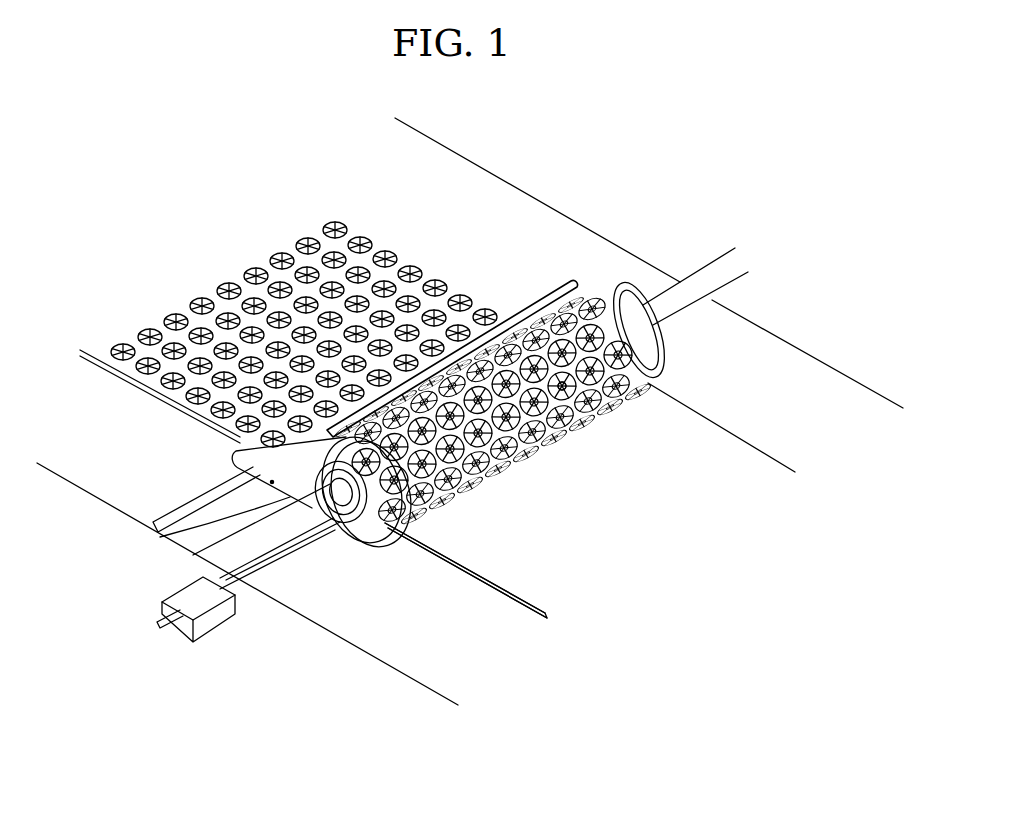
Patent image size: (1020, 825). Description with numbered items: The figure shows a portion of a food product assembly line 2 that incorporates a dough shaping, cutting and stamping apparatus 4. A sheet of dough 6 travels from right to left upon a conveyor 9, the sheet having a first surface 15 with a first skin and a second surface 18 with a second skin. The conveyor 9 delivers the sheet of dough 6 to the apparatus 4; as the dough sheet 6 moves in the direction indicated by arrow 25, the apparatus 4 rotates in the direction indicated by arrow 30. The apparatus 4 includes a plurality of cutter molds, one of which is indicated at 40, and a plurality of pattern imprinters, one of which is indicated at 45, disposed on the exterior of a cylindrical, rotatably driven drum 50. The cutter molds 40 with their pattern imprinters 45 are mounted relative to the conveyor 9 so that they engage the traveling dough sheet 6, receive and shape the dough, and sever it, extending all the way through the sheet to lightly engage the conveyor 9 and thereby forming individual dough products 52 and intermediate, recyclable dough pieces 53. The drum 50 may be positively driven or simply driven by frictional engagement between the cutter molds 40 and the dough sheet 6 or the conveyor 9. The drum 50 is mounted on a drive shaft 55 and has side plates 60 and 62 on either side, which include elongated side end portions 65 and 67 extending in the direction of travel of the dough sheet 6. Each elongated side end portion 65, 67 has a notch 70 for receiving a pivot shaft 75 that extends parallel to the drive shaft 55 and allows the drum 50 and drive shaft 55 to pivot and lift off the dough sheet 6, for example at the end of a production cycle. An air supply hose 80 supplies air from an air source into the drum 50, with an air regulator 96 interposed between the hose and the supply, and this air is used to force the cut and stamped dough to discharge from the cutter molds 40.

The food product assembly line 2 is at (624, 137).
The dough shaping, cutting and stamping apparatus 4 is at (576, 258).
The sheet of dough 6 is at (708, 444).
The conveyor 9 is at (402, 648).
The first surface 15 is at (492, 580).
The second surface 18 is at (472, 582).
The arrow 25 is at (730, 371).
The arrow 30 is at (661, 306).
The cutter mold 40 is at (570, 446).
The pattern imprinter 45 is at (571, 423).
The cylindrical drum 50 is at (514, 474).
The individual dough products 52 is at (340, 213).
The intermediate, recyclable dough pieces 53 is at (333, 243).
The drive shaft 55 is at (727, 253).
The side plate 60 is at (622, 282).
The side plate 62 is at (202, 555).
The elongated side end portion 65 is at (541, 276).
The elongated side end portion 67 is at (160, 537).
The notch 70 is at (240, 463).
The pivot shaft 75 is at (167, 512).
The air supply hose 80 is at (258, 572).
The air regulator 96 is at (195, 610).